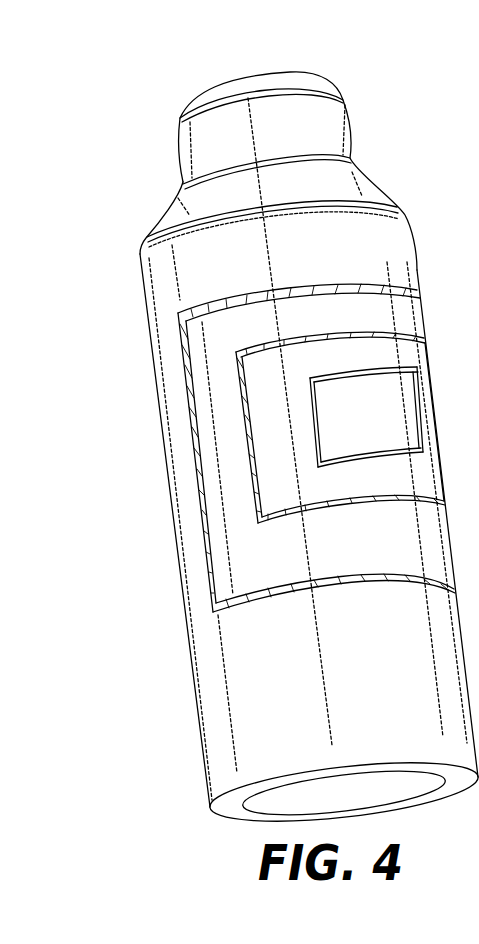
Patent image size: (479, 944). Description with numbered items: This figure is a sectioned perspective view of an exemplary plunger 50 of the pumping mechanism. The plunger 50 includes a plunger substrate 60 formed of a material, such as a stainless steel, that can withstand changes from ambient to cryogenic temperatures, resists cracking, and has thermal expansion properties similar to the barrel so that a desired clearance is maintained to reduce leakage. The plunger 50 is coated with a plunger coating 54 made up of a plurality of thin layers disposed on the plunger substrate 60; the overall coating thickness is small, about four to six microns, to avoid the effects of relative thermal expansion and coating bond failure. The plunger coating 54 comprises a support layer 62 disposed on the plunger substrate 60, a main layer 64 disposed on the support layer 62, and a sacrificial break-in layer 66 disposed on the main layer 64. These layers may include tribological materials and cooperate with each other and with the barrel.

The plunger 50 is at (426, 128).
The plunger coating 54 is at (358, 262).
The plunger substrate 60 is at (382, 426).
The support layer 62 is at (284, 439).
The main layer 64 is at (278, 569).
The sacrificial break-in layer 66 is at (278, 669).